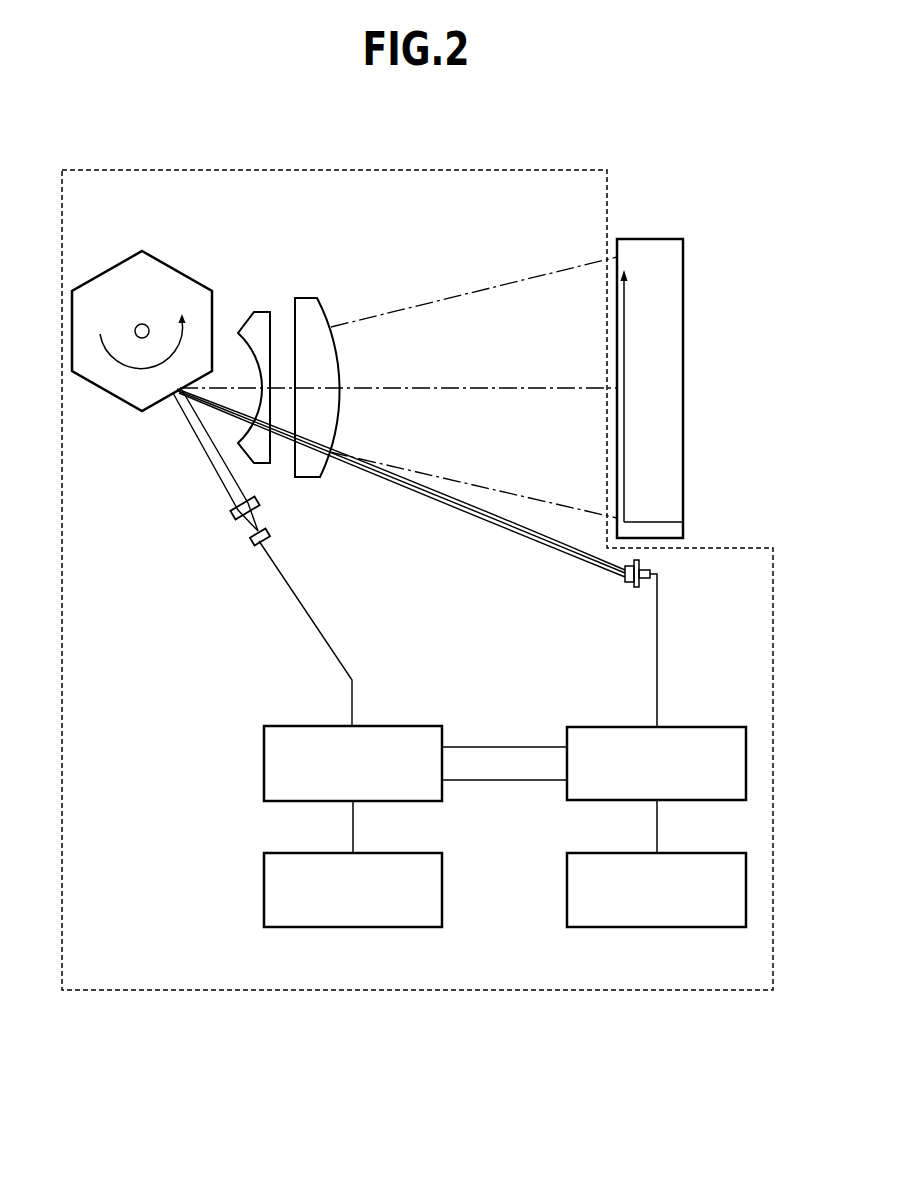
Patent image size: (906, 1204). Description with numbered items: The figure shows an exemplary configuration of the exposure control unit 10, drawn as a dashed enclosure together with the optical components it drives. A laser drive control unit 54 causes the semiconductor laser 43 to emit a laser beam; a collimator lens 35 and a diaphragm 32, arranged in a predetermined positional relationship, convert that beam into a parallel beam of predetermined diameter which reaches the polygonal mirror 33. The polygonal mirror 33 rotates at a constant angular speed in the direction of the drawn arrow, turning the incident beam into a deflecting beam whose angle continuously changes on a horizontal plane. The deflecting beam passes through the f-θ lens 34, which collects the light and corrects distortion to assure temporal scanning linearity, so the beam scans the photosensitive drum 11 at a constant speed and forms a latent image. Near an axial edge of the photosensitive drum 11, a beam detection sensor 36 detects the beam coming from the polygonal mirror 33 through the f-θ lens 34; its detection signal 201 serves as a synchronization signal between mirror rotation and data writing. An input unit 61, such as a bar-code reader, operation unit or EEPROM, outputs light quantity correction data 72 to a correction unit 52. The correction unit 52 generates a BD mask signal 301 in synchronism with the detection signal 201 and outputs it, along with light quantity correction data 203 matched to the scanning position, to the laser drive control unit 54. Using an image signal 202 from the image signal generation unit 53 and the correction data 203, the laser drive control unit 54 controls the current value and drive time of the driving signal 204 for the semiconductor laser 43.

The exposure control unit 10 is at (367, 990).
The photosensitive drum 11 is at (650, 239).
The diaphragm 32 is at (270, 486).
The polygonal mirror 33 is at (105, 393).
The f-θ lens 34 is at (232, 296).
The collimator lens 35 is at (237, 518).
The beam detection (BD) sensor 36 is at (628, 583).
The semiconductor laser 43 is at (270, 530).
The correction unit 52 is at (700, 727).
The image signal generation unit 53 is at (264, 892).
The laser drive control unit 54 is at (264, 764).
The input unit 61 is at (698, 853).
The light quantity correction data 72 is at (657, 826).
The detection signal (BD signal) 201 is at (658, 648).
The image signal 202 is at (353, 827).
The light quantity correction data 203 is at (505, 747).
The driving (light emission) signal 204 is at (335, 648).
The BD mask signal 301 is at (505, 780).